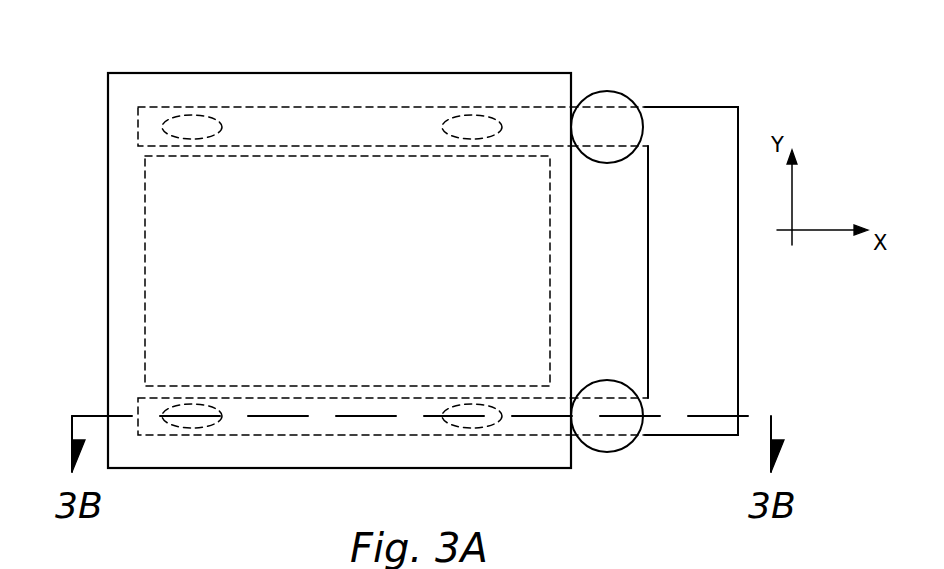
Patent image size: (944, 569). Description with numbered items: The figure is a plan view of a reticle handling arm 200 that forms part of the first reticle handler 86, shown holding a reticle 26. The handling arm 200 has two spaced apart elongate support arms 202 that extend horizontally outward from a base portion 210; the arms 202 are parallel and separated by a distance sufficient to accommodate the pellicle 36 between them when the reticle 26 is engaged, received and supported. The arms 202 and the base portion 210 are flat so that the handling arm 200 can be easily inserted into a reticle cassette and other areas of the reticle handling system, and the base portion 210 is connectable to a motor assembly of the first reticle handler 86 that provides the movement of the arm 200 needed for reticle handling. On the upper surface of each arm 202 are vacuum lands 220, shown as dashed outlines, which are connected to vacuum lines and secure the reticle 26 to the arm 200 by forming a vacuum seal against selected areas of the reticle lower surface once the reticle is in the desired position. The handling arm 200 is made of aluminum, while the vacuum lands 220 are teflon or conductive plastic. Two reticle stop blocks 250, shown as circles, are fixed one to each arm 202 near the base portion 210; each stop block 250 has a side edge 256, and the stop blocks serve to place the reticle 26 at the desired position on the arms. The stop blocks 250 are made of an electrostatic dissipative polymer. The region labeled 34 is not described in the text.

The first reticle handler 86 is at (92, 35).
The reticle 26 is at (518, 73).
The edge of substrate table 34 is at (572, 252).
The pellicle 36 is at (550, 213).
The reticle handling arm 200 is at (748, 104).
The support arms 202 is at (163, 107).
The base portion 210 is at (730, 305).
The vacuum lands 220 is at (198, 113).
The reticle stop blocks 250 is at (612, 93).
The side edge 256 is at (645, 128).